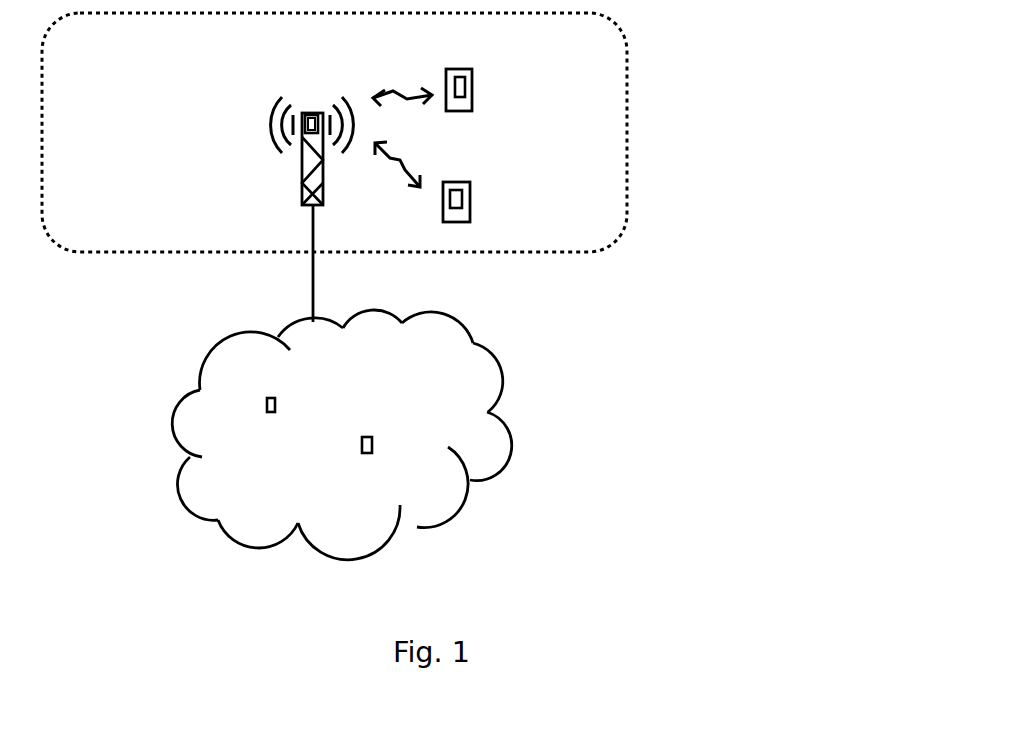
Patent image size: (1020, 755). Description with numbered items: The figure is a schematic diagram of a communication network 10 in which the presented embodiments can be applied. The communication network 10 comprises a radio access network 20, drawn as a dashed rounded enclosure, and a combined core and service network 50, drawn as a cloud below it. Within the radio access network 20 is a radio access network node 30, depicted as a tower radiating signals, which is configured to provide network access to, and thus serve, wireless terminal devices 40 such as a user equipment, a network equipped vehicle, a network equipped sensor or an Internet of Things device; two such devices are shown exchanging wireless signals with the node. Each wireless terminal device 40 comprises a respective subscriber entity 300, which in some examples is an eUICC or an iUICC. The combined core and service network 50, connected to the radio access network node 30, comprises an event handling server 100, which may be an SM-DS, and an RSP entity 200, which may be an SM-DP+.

The communication network 10 is at (728, 67).
The radio access network 20 is at (125, 68).
The radio access network node 30 is at (302, 199).
The wireless terminal device 40 is at (473, 90).
The subscriber entity 300 is at (460, 70).
The combined core and service network 50 is at (278, 503).
The event handling server 100 is at (272, 398).
The RSP entity 200 is at (368, 437).